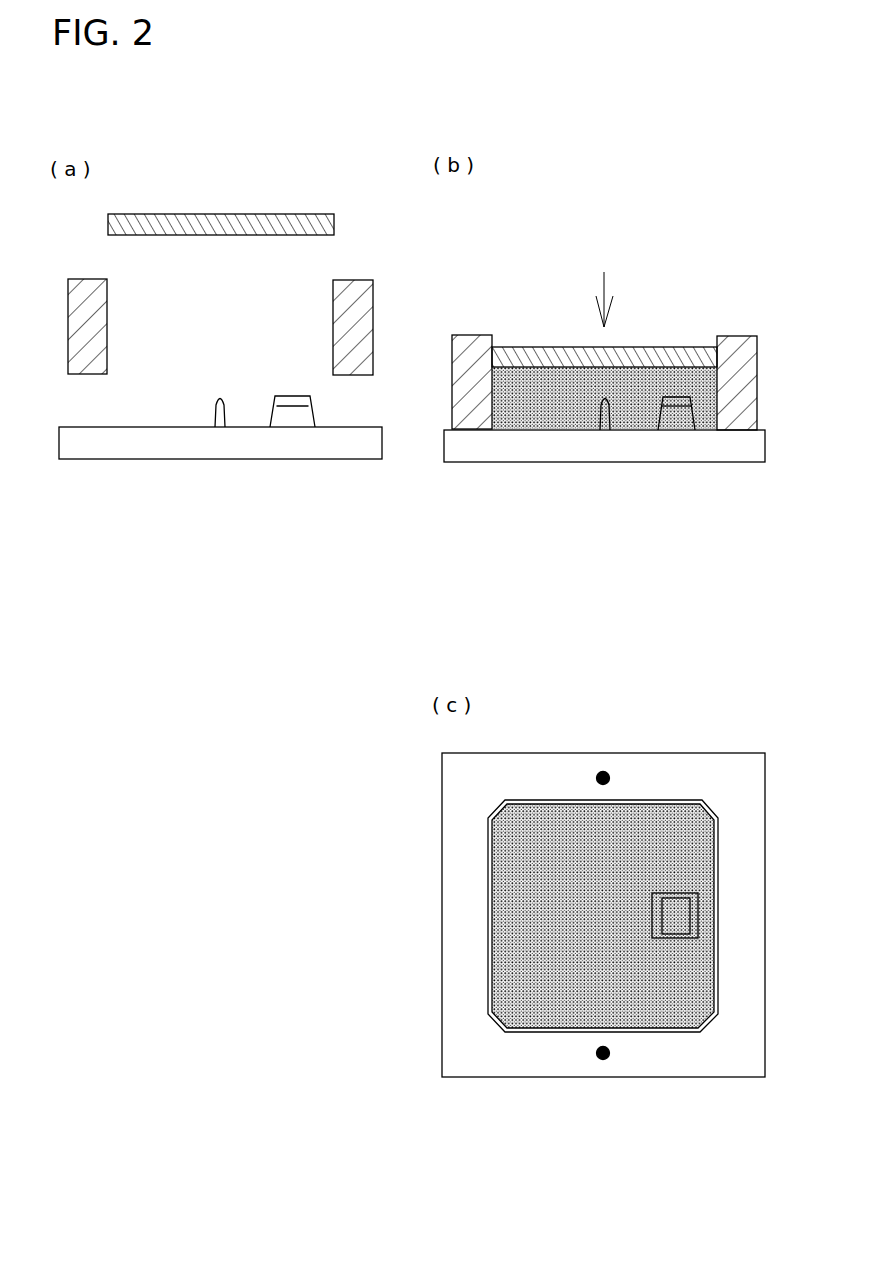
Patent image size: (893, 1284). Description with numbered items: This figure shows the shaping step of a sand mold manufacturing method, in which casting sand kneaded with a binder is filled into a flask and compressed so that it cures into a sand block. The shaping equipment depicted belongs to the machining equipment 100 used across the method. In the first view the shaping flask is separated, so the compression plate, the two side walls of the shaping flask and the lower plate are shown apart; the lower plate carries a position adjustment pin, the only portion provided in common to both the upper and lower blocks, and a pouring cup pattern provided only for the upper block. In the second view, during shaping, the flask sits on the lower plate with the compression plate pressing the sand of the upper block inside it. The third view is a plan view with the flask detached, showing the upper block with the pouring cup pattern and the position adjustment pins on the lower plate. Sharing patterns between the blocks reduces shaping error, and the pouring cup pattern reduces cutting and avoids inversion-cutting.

The machining equipment 100 is at (235, 324).